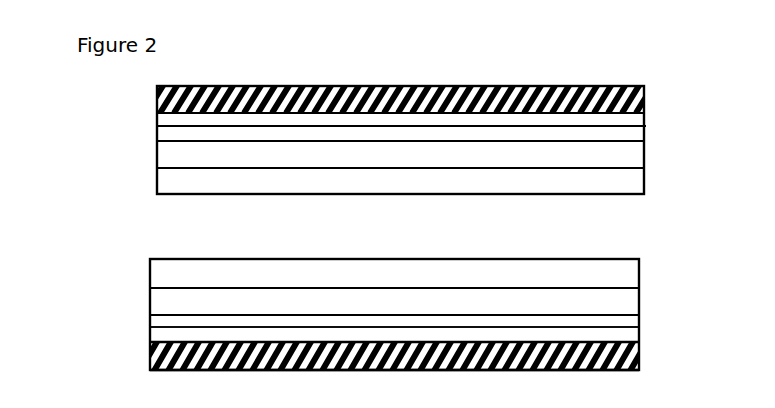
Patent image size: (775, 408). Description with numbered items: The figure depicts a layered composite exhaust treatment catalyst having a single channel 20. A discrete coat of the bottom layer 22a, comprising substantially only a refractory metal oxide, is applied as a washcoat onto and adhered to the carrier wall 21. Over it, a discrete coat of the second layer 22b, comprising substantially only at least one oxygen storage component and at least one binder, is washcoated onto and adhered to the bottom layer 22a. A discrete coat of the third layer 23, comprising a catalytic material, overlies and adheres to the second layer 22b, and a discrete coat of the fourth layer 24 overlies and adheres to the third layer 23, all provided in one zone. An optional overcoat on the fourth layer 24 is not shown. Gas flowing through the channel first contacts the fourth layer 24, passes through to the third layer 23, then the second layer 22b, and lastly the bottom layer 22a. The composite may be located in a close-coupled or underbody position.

The channel 20 is at (397, 302).
The carrier wall 21 is at (149, 355).
The bottom layer 22a is at (148, 333).
The second layer 22b is at (646, 318).
The third layer 23 is at (149, 304).
The fourth layer 24 is at (149, 277).